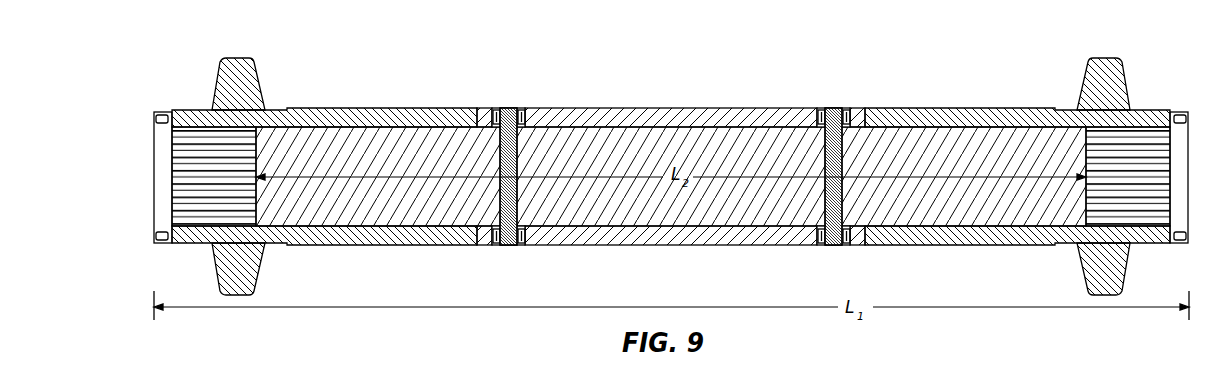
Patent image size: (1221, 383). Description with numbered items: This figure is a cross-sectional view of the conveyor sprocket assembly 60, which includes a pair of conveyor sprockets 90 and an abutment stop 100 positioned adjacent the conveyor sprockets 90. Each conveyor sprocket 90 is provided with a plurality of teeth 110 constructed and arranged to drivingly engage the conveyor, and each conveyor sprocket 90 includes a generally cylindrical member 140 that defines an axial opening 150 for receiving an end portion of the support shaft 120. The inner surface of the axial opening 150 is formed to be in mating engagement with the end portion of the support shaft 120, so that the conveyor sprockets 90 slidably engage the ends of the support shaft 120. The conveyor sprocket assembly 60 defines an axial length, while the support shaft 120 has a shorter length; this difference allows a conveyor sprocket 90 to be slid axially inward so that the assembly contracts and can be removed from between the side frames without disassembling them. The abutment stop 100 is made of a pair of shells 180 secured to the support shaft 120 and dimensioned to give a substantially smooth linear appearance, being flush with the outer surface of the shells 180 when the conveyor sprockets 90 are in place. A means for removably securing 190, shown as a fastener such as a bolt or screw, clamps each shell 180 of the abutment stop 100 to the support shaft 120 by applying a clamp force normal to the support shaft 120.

The conveyor sprocket assembly 60 is at (670, 158).
The conveyor sprocket 90 is at (677, 158).
The abutment stop 100 is at (671, 175).
The teeth 110 is at (218, 72).
The support shaft 120 is at (398, 210).
The generally cylindrical member 140 is at (366, 108).
The axial opening 150 is at (183, 225).
The shell 180 is at (721, 116).
The means for removably securing 190 is at (507, 108).